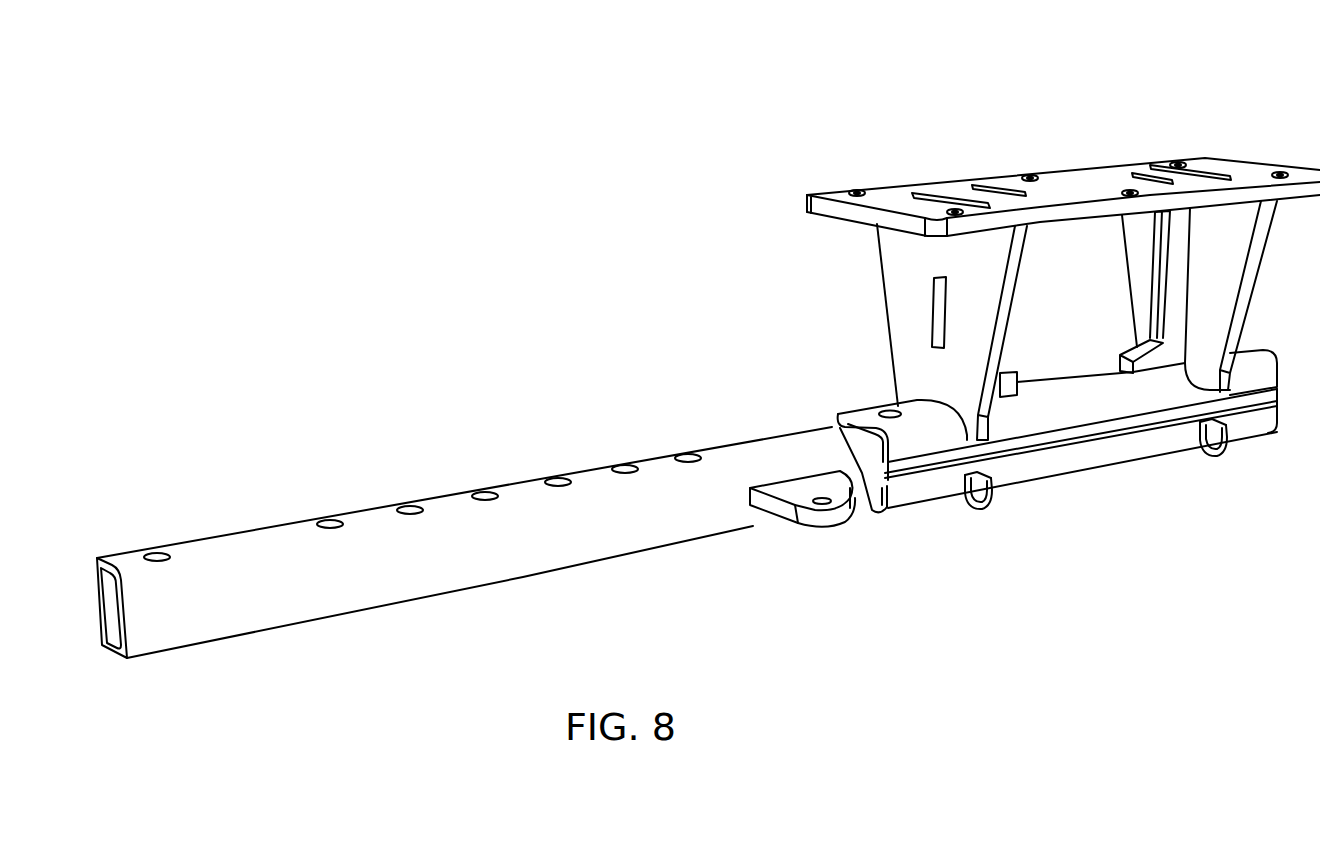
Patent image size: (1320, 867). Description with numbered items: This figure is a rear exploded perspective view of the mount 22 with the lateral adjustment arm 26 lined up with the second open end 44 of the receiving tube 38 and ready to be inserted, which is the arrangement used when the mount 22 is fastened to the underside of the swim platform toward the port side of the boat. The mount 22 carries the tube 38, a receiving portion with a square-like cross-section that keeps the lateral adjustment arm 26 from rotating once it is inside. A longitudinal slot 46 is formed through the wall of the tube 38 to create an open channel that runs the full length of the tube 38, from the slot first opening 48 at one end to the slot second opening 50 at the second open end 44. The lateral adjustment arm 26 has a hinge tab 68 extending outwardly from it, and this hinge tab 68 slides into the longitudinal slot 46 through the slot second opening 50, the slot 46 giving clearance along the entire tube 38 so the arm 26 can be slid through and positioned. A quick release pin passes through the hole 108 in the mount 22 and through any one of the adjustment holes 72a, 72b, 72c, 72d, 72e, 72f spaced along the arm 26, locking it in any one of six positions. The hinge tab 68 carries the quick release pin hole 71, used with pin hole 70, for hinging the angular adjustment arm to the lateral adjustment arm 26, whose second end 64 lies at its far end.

The mount 22 is at (1072, 137).
The lateral adjustment arm 26 is at (453, 529).
The tube (receiving portion) 38 is at (1125, 460).
The second open end 44 is at (877, 461).
The longitudinal slot (open channel) 46 is at (1057, 437).
The slot first opening 48 is at (1265, 398).
The slot second opening 50 is at (892, 472).
The second end 64 is at (98, 624).
The hinge tab 68 is at (795, 546).
The quick release pin hole 70 is at (825, 508).
The quick release pin hole 71 is at (157, 552).
The adjustment hole 72a is at (688, 453).
The adjustment hole 72b is at (625, 464).
The adjustment hole 72c is at (558, 477).
The adjustment hole 72d is at (485, 491).
The adjustment hole 72e is at (410, 505).
The adjustment hole 72f is at (329, 518).
The quick release pin hole 108 is at (885, 411).